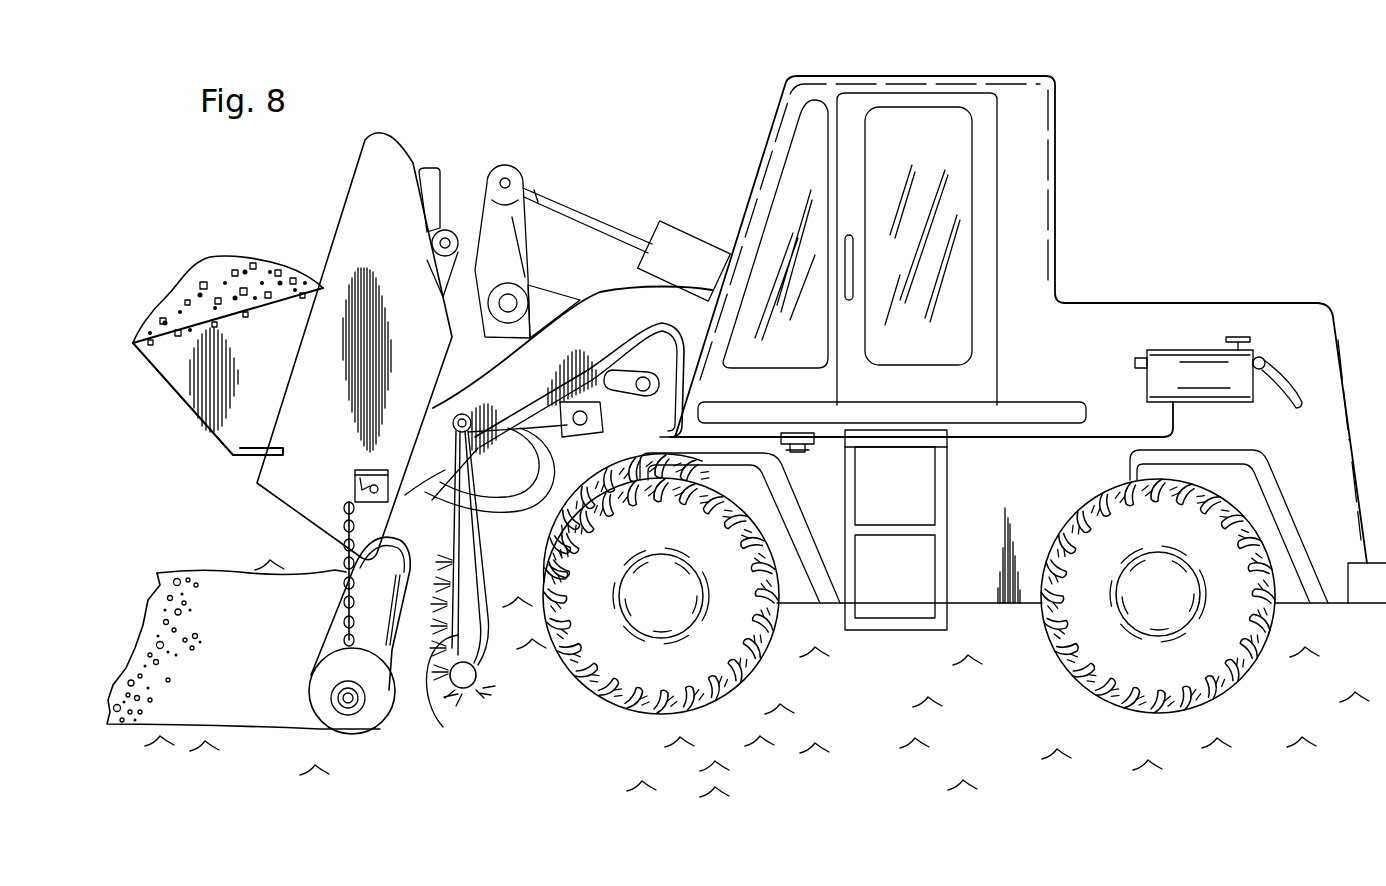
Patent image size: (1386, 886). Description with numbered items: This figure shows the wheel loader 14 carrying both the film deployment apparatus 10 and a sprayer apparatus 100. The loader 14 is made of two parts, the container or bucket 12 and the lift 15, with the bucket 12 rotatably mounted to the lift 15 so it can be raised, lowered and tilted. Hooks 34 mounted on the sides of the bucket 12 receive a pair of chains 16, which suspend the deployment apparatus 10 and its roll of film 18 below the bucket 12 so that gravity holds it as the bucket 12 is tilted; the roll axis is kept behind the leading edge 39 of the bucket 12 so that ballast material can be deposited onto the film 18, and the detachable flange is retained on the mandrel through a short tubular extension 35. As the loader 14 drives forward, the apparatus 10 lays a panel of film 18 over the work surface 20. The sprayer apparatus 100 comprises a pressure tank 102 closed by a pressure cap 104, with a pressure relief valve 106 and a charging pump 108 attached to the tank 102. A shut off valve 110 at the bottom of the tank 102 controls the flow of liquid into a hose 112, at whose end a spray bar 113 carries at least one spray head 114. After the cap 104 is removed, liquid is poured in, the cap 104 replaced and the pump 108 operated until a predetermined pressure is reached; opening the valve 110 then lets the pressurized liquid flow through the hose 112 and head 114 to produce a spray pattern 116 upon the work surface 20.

The film deployment apparatus 10 is at (280, 648).
The bucket 12 is at (178, 352).
The loader 14 is at (887, 77).
The lift 15 is at (470, 533).
The chains 16 is at (344, 524).
The roll of film 18 is at (297, 690).
The work surface 20 is at (200, 745).
The hooks 34 is at (352, 488).
The tubular extension 35 is at (348, 715).
The leading edge 39 is at (132, 340).
The sprayer apparatus 100 is at (506, 600).
The pressure tank 102 is at (1197, 348).
The pressure cap 104 is at (1238, 336).
The pressure relief valve 106 is at (1141, 357).
The charging pump 108 is at (1282, 380).
The shut off valve 110 is at (797, 452).
The hose 112 is at (982, 443).
The spray bar 113 is at (425, 650).
The spray head 114 is at (477, 685).
The spray pattern 116 is at (462, 708).